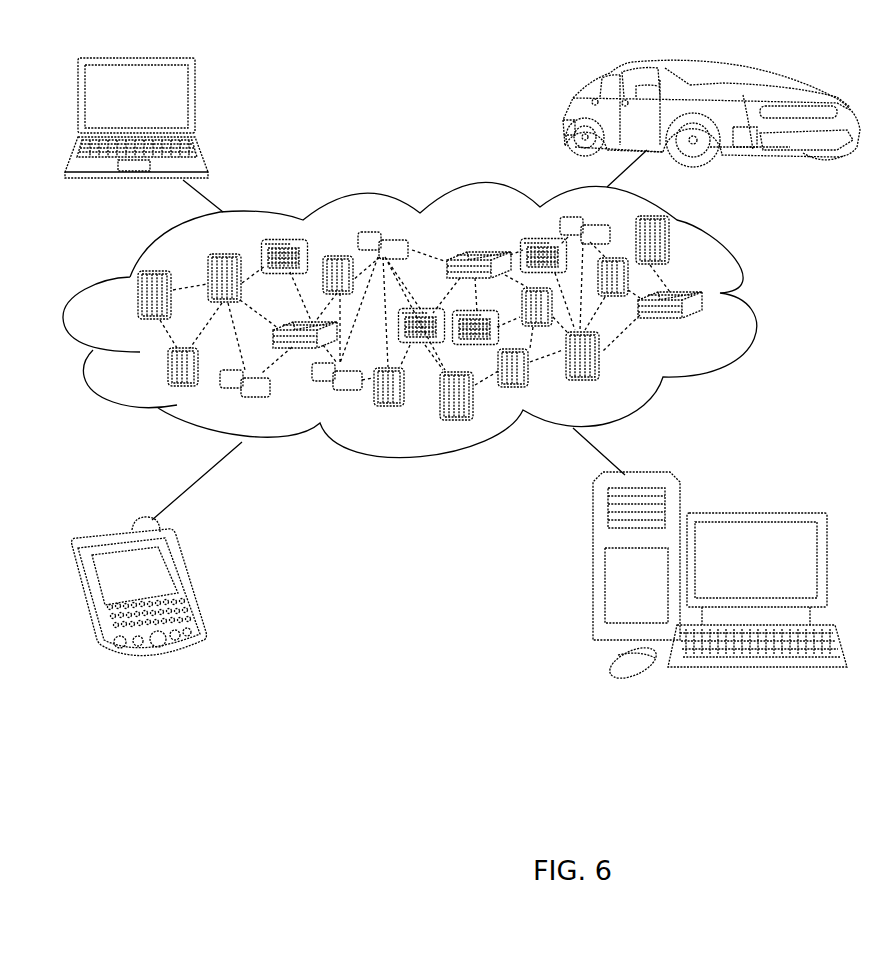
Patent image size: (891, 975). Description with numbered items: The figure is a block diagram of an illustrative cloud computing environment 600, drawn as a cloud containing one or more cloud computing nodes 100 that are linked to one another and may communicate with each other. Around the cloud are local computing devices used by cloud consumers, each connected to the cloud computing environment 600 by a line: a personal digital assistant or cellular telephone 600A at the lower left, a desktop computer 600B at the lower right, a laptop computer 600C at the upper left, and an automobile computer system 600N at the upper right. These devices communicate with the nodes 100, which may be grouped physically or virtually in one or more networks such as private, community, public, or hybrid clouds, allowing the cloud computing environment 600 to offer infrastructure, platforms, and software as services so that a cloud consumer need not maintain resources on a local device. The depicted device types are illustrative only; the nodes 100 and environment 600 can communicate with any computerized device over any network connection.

The cloud computing node 100 is at (706, 326).
The cloud computing environment 600 is at (440, 319).
The personal digital assistant (PDA) or cellular telephone 600A is at (185, 583).
The desktop computer 600B is at (753, 511).
The laptop computer 600C is at (196, 103).
The automobile computer system 600N is at (566, 115).